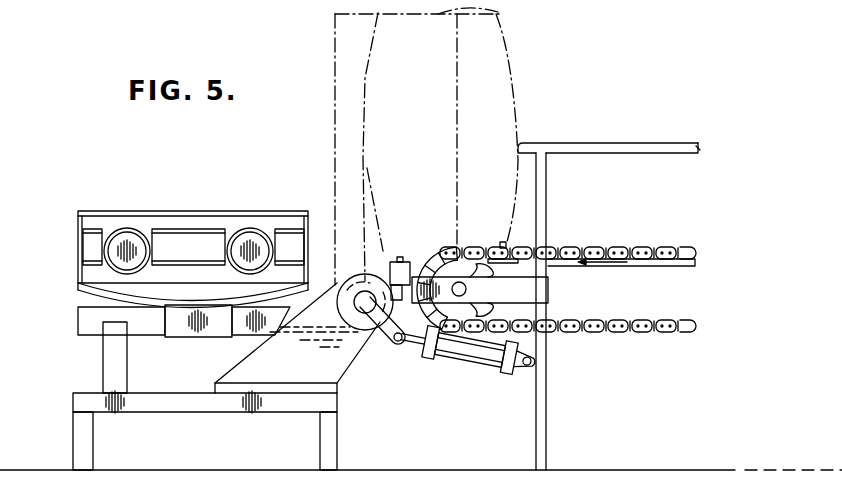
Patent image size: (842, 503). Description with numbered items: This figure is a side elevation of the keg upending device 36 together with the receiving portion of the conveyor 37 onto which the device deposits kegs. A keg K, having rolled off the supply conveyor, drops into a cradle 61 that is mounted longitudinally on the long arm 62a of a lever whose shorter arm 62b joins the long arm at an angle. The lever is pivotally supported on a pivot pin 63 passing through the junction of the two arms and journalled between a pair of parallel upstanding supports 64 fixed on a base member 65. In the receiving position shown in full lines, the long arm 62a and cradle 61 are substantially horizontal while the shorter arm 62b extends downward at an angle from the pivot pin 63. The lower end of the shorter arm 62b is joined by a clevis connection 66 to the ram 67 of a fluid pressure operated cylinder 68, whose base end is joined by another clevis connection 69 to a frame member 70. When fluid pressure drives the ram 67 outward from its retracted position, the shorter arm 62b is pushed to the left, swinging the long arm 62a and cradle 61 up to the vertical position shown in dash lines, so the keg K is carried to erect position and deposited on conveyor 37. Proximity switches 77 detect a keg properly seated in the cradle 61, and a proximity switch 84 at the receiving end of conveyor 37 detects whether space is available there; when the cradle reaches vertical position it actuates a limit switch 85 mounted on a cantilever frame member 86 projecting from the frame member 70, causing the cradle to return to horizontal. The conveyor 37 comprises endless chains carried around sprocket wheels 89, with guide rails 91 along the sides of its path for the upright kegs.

The keg K is at (503, 108).
The keg upending device 36 is at (73, 316).
The conveyor 37 is at (558, 242).
The cradle 61 is at (77, 251).
The long arm 62a is at (147, 336).
The shorter arm 62b is at (372, 315).
The pivot pin 63 is at (366, 345).
The upstanding supports 64 is at (353, 360).
The base member 65 is at (302, 402).
The clevis connection 66 is at (410, 345).
The ram 67 is at (415, 352).
The fluid pressure operated cylinder 68 is at (483, 357).
The clevis connection 69 is at (523, 378).
The frame member 70 is at (548, 414).
The proximity switches 77 is at (137, 238).
The proximity switch 84 is at (512, 242).
The limit switch 85 is at (388, 262).
The cantilever frame member 86 is at (508, 301).
The sprocket wheels 89 is at (500, 312).
The guide rails 91 is at (664, 150).